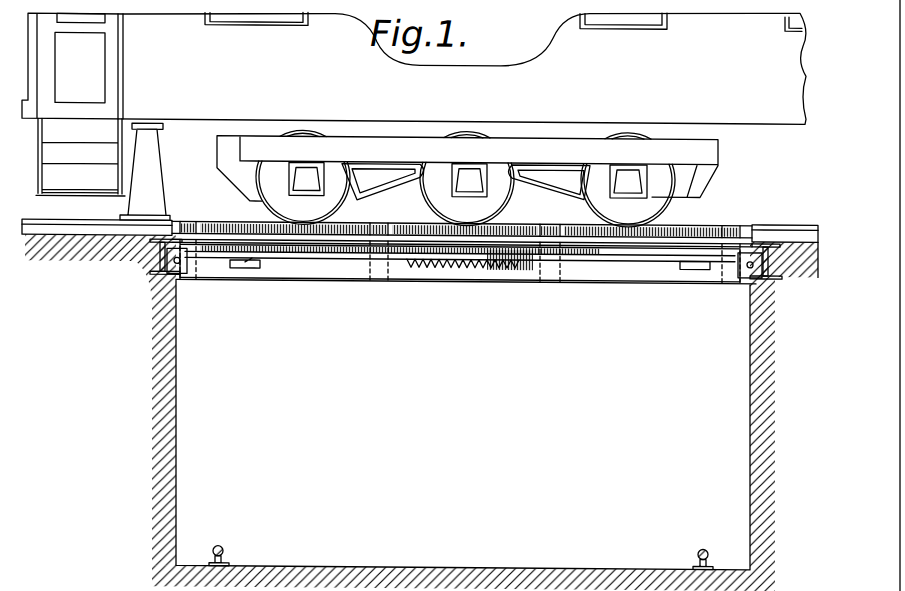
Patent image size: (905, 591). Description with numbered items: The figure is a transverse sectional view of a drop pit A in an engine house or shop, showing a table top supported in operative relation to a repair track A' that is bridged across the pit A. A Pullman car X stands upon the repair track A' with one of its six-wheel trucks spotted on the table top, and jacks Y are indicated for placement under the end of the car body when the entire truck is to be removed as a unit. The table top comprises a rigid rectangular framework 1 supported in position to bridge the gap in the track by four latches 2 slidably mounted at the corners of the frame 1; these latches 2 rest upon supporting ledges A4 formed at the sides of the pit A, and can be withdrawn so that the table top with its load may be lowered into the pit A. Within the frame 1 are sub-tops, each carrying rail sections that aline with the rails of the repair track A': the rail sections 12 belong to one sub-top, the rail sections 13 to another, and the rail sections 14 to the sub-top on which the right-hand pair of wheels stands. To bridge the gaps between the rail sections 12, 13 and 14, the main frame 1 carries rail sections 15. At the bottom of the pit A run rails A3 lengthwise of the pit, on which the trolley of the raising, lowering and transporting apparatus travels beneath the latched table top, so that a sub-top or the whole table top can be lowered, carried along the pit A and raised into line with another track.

The Pullman car X is at (575, 22).
The jacks Y is at (150, 167).
The pit A is at (421, 412).
The repair track A' is at (420, 207).
The rails A3 is at (221, 545).
The supporting ledges A4 is at (163, 275).
The rigid rectangular framework 1 is at (602, 284).
The latches 2 is at (177, 266).
The rail sections 12 is at (505, 232).
The rail sections 13 is at (219, 221).
The rail sections 14 is at (698, 220).
The rail sections 15 is at (191, 221).